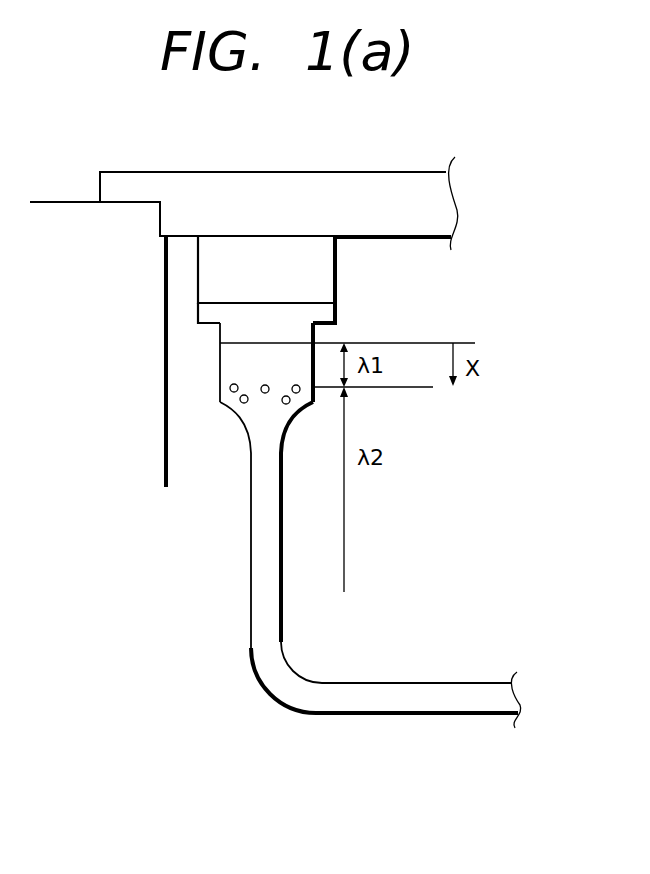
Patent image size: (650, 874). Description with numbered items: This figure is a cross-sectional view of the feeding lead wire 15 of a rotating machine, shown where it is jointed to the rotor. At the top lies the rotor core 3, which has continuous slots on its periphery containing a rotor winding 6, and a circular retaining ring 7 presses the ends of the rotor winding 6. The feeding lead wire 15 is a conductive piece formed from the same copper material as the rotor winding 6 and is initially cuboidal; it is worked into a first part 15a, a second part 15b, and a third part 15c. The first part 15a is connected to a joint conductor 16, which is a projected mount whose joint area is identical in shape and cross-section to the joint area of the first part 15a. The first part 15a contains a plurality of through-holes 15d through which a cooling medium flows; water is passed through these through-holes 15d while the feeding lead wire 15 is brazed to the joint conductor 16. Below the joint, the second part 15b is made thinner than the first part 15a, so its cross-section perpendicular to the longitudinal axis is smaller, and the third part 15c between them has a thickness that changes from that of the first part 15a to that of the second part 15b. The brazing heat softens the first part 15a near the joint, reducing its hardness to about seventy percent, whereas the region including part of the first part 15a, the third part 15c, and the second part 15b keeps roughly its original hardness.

The rotor core 3 is at (52, 216).
The retaining ring 7 is at (287, 183).
The rotor winding 6 is at (317, 270).
The joint conductor 16 is at (317, 312).
The feeding lead wire 15 is at (363, 698).
The first part 15a is at (247, 355).
The second part 15b is at (250, 530).
The third part 15c is at (252, 430).
The through-holes 15d is at (223, 390).